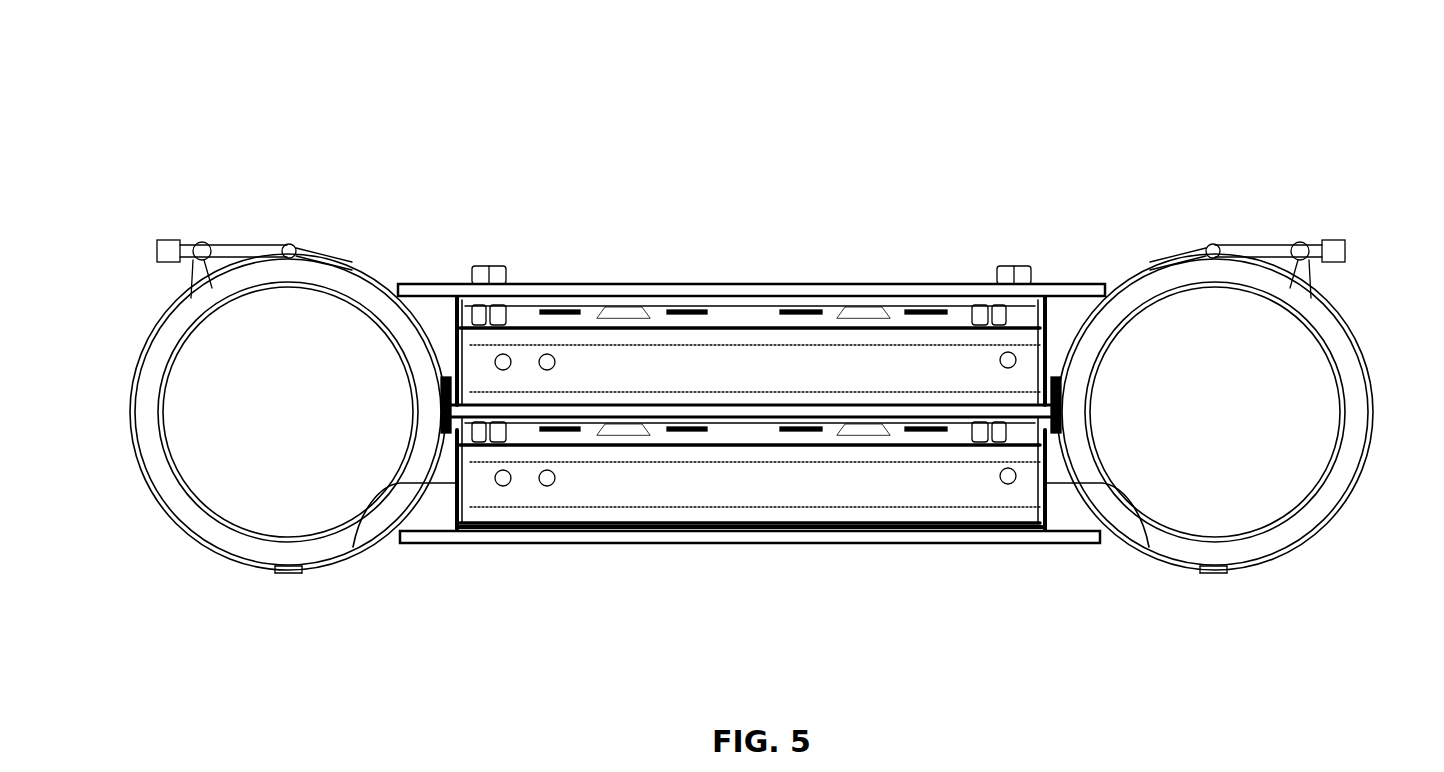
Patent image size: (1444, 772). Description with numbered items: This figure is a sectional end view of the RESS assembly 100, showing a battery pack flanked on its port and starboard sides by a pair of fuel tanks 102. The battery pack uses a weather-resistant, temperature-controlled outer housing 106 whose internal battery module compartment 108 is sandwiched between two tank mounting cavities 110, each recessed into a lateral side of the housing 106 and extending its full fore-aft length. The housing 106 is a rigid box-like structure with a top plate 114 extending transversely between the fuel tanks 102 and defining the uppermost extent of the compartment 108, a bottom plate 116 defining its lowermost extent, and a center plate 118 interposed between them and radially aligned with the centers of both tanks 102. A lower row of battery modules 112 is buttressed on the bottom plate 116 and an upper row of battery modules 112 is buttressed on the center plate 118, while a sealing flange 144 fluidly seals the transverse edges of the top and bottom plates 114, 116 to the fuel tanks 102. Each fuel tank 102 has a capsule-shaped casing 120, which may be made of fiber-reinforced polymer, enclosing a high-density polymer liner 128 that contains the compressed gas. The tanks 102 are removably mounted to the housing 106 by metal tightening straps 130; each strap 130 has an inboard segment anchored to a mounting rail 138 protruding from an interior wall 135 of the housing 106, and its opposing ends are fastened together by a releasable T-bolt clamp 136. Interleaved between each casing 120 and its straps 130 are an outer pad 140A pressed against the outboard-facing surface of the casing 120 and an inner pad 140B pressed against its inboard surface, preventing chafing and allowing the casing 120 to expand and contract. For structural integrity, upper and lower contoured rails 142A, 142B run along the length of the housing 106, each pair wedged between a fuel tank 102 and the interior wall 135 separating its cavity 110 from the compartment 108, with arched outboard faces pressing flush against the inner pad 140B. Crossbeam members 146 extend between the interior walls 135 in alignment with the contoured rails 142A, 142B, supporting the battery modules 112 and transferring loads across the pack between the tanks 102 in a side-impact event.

The RESS assembly 100 is at (270, 78).
The fuel tank 102 is at (185, 172).
The battery pack housing 106 is at (737, 274).
The battery module compartment 108 is at (1003, 265).
The tank mounting cavity 110 is at (427, 527).
The battery module 112 is at (850, 300).
The top plate 114 is at (655, 283).
The bottom plate 116 is at (797, 545).
The center plate 118 is at (558, 413).
The casing 120 is at (131, 412).
The polymer liner 128 is at (187, 340).
The tightening strap 130 is at (326, 258).
The interior wall 135 is at (358, 520).
The T-bolt clamp 136 is at (240, 244).
The mounting rail 138 is at (400, 310).
The outer pad 140A is at (236, 558).
The inner pad 140B is at (316, 567).
The upper contoured rail 142A is at (438, 312).
The lower contoured rail 142B is at (440, 517).
The sealing flange 144 is at (390, 298).
The crossbeam member 146 is at (620, 507).